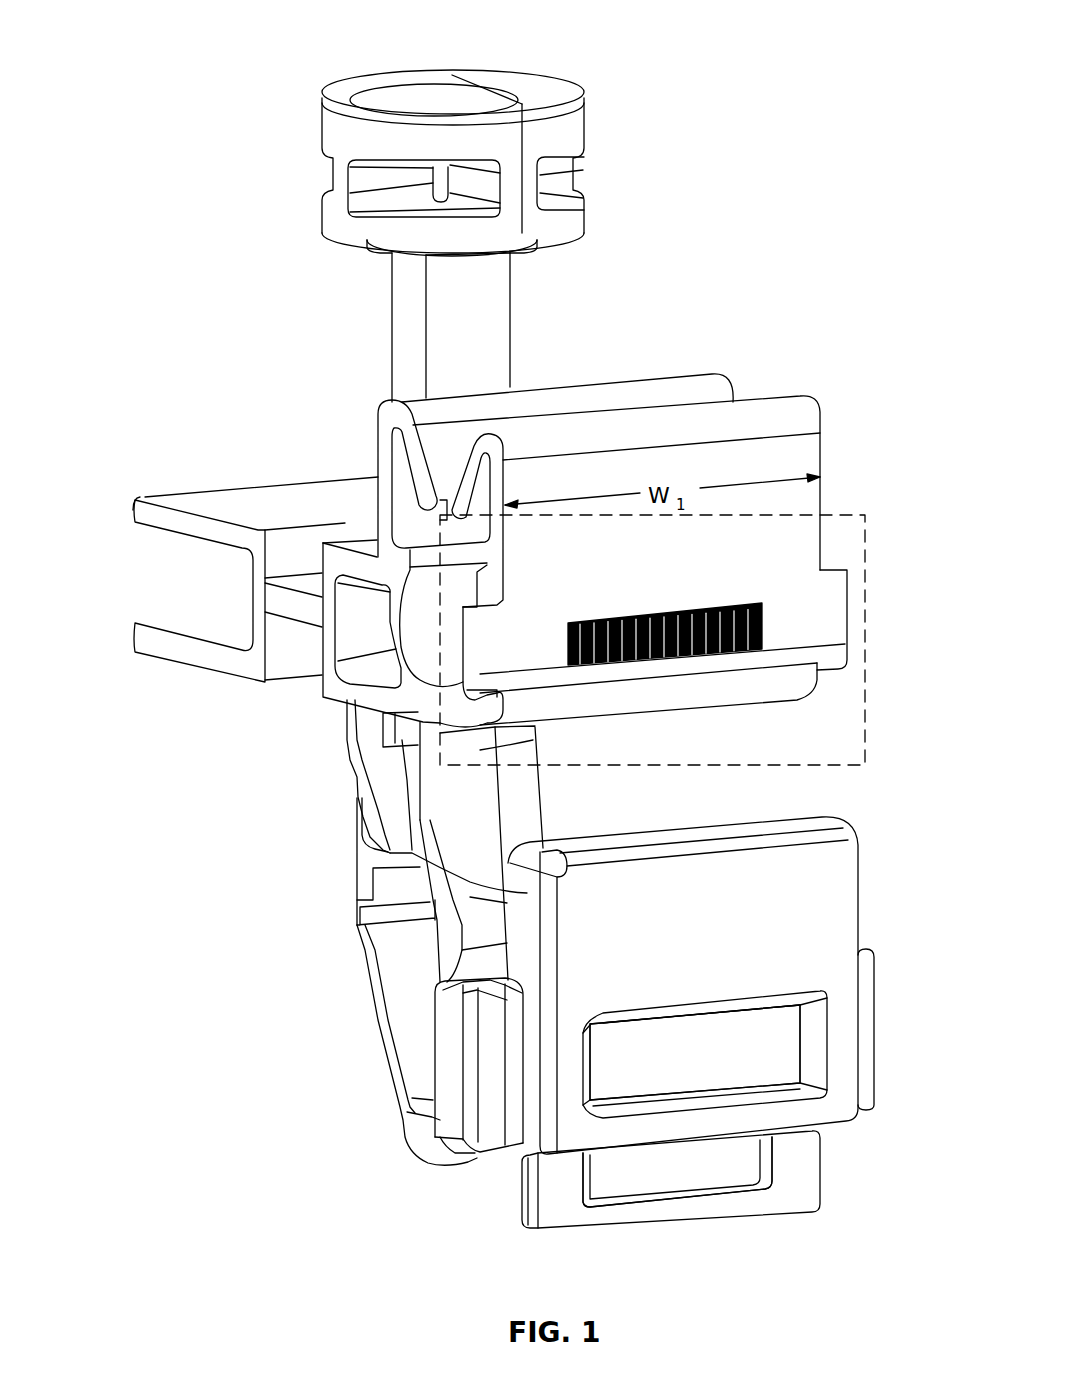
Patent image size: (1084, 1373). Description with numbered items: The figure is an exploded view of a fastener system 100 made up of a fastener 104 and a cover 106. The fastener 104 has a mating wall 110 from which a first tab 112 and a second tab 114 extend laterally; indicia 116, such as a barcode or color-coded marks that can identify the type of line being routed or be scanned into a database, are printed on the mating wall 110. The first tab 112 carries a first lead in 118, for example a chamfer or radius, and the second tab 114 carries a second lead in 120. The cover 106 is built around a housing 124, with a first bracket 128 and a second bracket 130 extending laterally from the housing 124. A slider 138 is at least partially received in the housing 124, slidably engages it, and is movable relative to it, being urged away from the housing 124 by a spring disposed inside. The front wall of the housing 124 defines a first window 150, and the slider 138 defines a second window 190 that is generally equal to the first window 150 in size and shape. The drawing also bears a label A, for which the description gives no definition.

The fastener system 100 is at (140, 48).
The fastener 104 is at (332, 130).
The cover 106 is at (452, 1125).
The mating wall 110 is at (790, 462).
The first tab 112 is at (492, 637).
The second tab 114 is at (837, 613).
The indicia 116 is at (680, 660).
The first lead in 118 is at (437, 732).
The second lead in 120 is at (837, 670).
The housing 124 is at (388, 853).
The first bracket 128 is at (447, 1085).
The second bracket 130 is at (865, 1002).
The slider 138 is at (807, 1183).
The first window 150 is at (773, 1030).
The second window 190 is at (652, 1155).
The flex region A is at (470, 763).